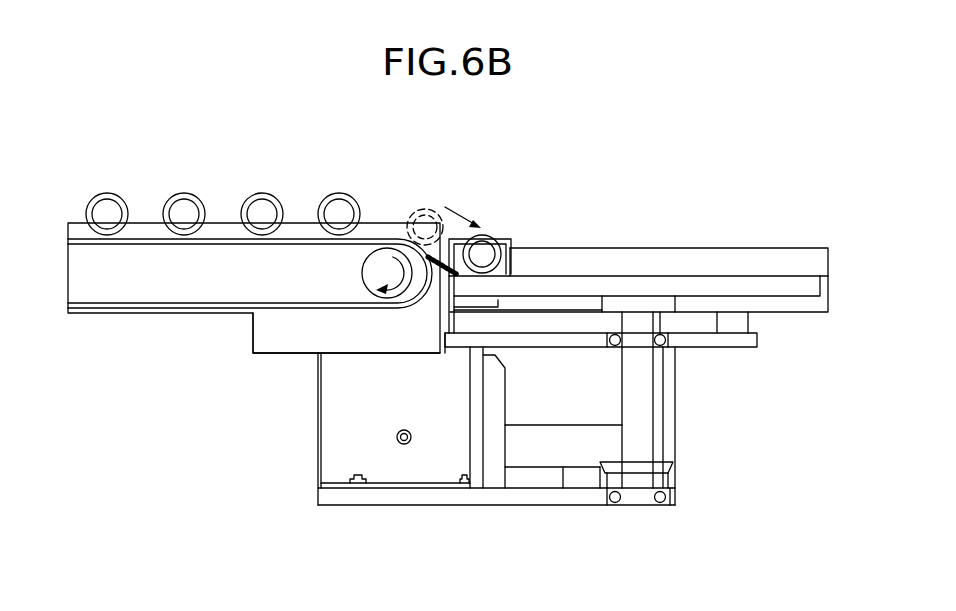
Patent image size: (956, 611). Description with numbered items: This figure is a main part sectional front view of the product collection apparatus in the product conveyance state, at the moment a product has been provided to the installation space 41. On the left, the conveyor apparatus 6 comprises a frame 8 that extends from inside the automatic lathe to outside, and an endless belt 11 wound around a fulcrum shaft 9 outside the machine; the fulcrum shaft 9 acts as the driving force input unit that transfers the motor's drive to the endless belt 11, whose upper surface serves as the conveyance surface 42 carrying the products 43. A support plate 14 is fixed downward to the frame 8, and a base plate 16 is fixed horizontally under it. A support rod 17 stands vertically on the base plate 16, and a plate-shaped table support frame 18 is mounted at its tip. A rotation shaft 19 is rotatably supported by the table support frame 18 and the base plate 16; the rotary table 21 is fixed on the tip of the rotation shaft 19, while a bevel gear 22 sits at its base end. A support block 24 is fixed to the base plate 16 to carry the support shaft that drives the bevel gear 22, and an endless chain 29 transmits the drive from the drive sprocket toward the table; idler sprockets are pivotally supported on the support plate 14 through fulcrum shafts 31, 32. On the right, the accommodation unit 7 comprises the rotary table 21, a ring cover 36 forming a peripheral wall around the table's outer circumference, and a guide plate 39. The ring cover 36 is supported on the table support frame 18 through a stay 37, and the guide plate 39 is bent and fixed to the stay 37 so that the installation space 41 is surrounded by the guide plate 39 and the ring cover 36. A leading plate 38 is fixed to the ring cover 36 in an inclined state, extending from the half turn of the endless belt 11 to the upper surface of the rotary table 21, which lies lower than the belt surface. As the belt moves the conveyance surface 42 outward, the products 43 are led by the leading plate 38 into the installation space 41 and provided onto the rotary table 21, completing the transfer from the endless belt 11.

The conveyor apparatus 6 is at (295, 162).
The accommodation unit 7 is at (584, 227).
The frame 8 is at (270, 342).
The fulcrum shaft 9 is at (385, 258).
The endless belt 11 is at (145, 313).
The support plate 14 is at (335, 410).
The base plate 16 is at (513, 497).
The support rod 17 is at (668, 438).
The table support frame 18 is at (734, 343).
The rotation shaft 19 is at (640, 427).
The rotary table 21 is at (698, 292).
The bevel gear 22 is at (663, 467).
The support block 24 is at (609, 476).
The endless chain 29 is at (563, 470).
The fulcrum shaft 31 is at (483, 396).
The fulcrum shaft 32 is at (405, 445).
The ring cover 36 is at (656, 248).
The stay 37 is at (455, 313).
The leading plate 38 is at (435, 250).
The guide plate 39 is at (487, 235).
The installation space 41 is at (508, 270).
The conveyance surface 42 is at (219, 237).
The products 43 is at (107, 192).